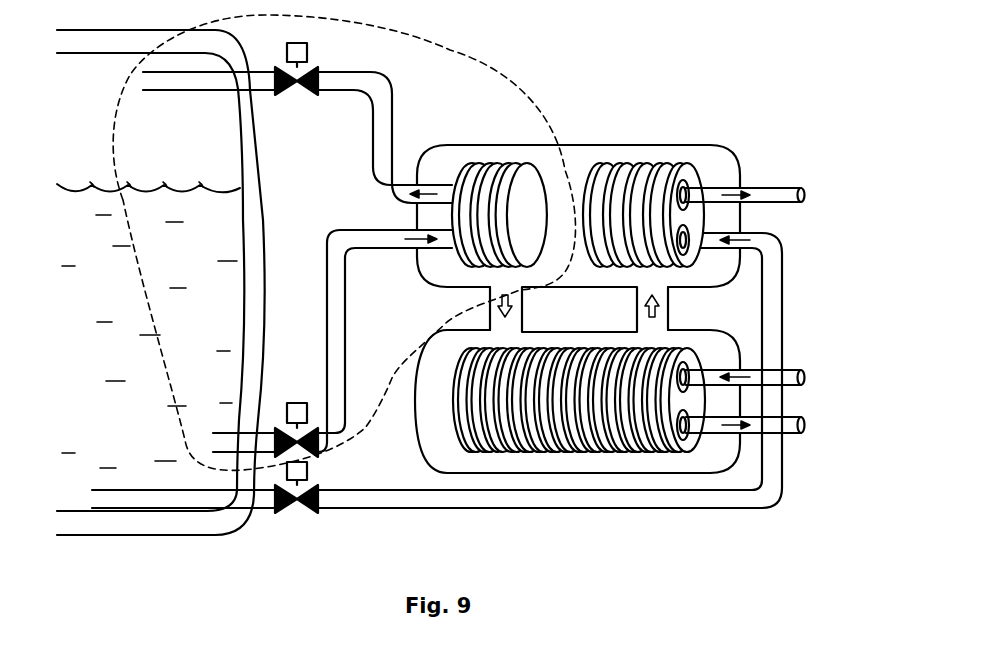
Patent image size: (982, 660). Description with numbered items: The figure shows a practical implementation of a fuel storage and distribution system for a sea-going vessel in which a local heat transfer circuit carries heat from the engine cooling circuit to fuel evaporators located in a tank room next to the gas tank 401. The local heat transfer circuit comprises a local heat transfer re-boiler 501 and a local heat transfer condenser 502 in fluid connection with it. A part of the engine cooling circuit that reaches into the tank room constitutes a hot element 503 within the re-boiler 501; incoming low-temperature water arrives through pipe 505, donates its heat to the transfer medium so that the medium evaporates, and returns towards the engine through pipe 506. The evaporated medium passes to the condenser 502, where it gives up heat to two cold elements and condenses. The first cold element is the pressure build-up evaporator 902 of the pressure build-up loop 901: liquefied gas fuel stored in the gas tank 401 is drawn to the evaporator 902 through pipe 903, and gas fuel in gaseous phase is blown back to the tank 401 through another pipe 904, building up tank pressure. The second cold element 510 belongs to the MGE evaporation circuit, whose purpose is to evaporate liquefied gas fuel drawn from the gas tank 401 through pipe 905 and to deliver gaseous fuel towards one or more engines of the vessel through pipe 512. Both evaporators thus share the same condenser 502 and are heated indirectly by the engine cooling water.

The gas tank 401 is at (238, 512).
The pressure build-up loop 901 is at (530, 100).
The pipe 904 is at (372, 132).
The pipe 903 is at (327, 356).
The pipe 905 is at (540, 509).
The local heat transfer condenser 502 is at (420, 258).
The pressure build-up evaporator 902 is at (470, 262).
The cold element 510 is at (648, 162).
The pipe 512 is at (792, 186).
The local heat transfer re-boiler 501 is at (422, 442).
The hot element 503 is at (455, 447).
The pipe 505 is at (797, 370).
The pipe 506 is at (797, 433).